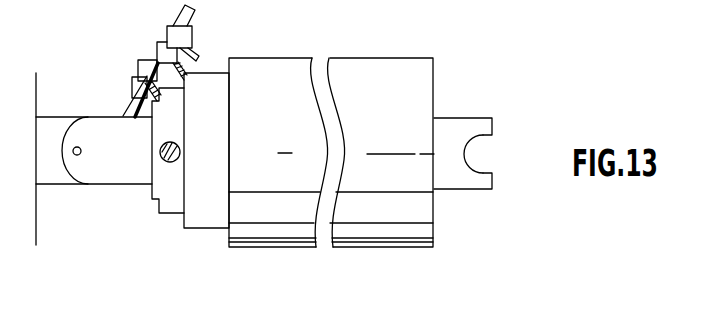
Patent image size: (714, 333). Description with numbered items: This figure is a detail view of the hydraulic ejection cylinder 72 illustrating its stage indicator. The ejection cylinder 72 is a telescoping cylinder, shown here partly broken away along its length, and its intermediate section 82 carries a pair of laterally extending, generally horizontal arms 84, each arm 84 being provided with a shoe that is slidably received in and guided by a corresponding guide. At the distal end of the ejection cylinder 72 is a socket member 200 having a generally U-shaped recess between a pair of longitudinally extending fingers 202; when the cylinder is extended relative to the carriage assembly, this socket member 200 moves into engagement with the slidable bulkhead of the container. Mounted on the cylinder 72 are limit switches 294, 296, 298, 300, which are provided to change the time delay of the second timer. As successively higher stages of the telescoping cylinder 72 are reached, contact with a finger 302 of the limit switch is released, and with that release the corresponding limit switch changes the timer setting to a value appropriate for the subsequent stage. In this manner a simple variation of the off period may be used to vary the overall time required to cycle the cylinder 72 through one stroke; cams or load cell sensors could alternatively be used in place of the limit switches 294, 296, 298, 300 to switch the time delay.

The ejection cylinder 72 is at (230, 236).
The intermediate section 82 is at (167, 210).
The arm 84 is at (178, 150).
The socket member 200 is at (448, 128).
The finger 202 is at (492, 127).
The limit switch 294 is at (185, 38).
The limit switch 296 is at (158, 42).
The limit switch 298 is at (137, 67).
The limit switch 300 is at (137, 89).
The finger 302 is at (195, 60).